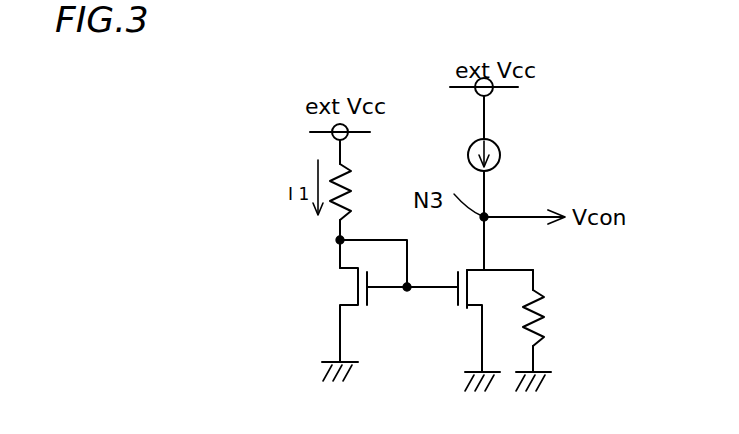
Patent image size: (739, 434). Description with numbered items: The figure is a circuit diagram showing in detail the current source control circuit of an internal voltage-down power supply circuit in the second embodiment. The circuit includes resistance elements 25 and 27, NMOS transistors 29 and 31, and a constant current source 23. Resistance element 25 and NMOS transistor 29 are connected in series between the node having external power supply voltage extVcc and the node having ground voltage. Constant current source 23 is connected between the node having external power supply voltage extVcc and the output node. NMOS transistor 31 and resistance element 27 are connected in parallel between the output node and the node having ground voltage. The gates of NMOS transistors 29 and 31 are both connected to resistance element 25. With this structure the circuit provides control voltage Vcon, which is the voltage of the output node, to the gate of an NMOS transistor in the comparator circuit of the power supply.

The constant current source 23 is at (498, 147).
The resistance element 25 is at (352, 182).
The resistance element 27 is at (546, 312).
The NMOS transistor 29 is at (345, 287).
The NMOS transistor 31 is at (453, 300).